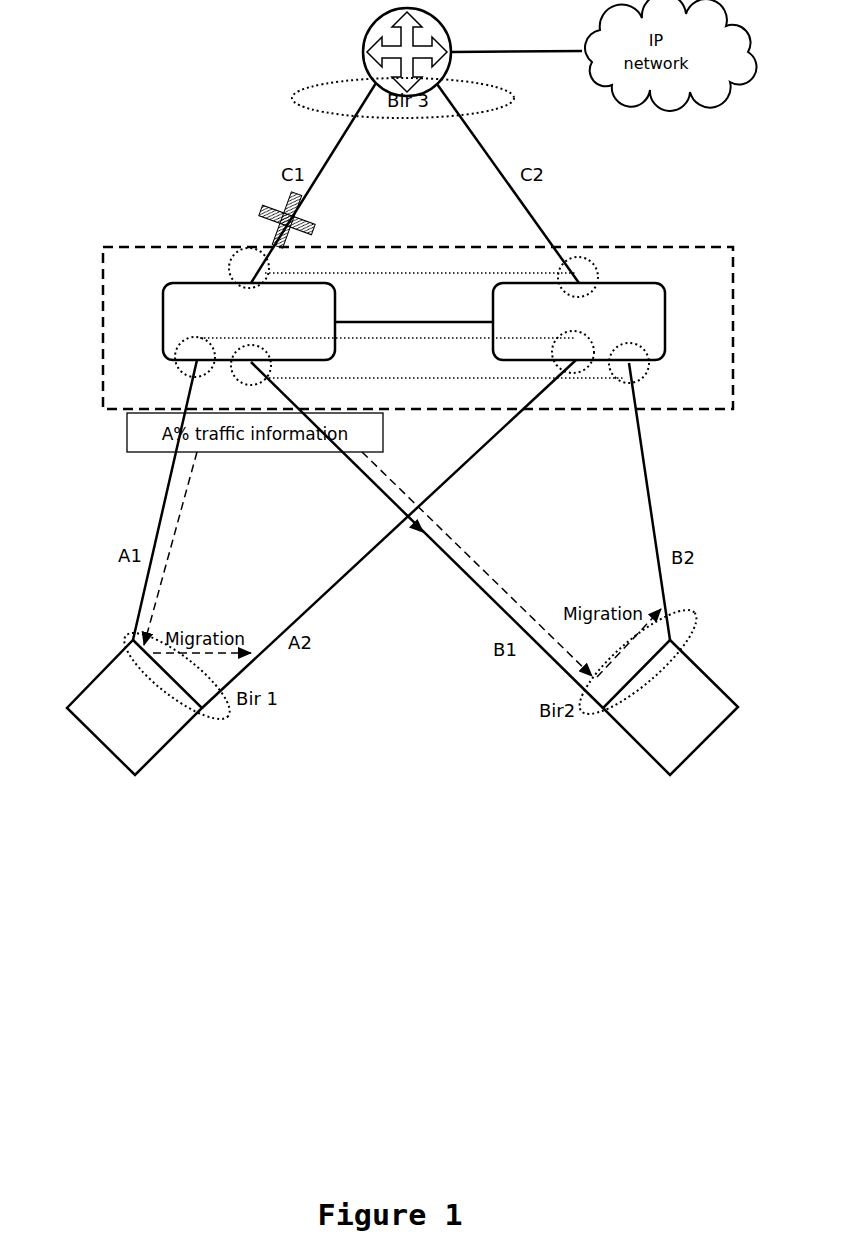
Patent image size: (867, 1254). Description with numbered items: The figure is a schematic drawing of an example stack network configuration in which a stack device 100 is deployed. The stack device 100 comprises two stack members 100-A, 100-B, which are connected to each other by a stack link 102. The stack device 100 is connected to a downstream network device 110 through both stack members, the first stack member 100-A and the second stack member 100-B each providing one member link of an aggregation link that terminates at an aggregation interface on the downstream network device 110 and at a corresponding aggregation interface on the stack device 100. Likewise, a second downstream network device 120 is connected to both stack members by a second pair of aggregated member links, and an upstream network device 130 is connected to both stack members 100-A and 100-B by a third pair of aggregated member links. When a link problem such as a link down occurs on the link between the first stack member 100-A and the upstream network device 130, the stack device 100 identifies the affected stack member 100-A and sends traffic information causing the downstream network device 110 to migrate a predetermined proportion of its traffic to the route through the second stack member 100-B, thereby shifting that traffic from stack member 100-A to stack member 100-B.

The upstream network device 130 is at (366, 71).
The stack device 100 is at (690, 277).
The stack member 100-A is at (249, 321).
The stack member 100-B is at (579, 321).
The stack link 102 is at (414, 310).
The downstream network device 110 is at (134, 707).
The second downstream network device 120 is at (670, 707).